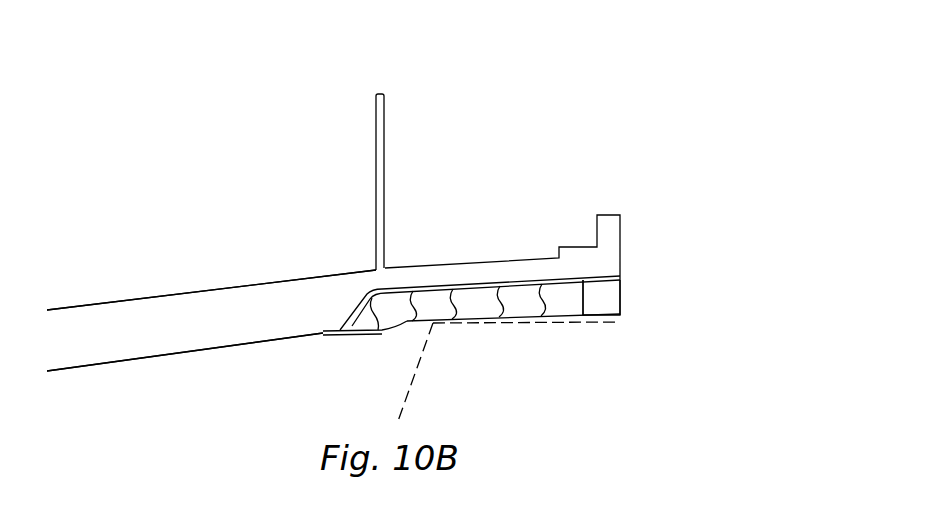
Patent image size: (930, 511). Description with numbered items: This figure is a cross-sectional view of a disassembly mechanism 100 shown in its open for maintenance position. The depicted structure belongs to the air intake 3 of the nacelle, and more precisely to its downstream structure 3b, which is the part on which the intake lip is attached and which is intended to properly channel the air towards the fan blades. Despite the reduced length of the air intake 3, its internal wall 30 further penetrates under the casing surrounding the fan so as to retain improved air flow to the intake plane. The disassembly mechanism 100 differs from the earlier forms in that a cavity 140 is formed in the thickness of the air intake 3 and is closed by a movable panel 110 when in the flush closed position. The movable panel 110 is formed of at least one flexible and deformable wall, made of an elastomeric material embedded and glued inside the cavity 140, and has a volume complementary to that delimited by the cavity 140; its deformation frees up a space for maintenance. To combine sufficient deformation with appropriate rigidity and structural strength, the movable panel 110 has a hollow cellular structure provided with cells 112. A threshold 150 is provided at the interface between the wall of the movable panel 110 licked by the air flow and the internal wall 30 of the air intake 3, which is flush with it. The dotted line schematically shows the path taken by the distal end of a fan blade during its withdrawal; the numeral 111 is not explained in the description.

The air intake 3 is at (192, 271).
The downstream structure 3b is at (130, 315).
The internal wall 30 is at (195, 353).
The disassembly mechanism 100 is at (567, 172).
The cavity 140 is at (473, 285).
The threshold 150 is at (335, 338).
The movable panel 110 is at (600, 304).
The cells 112 is at (572, 297).
The bottom surface 111 is at (521, 325).